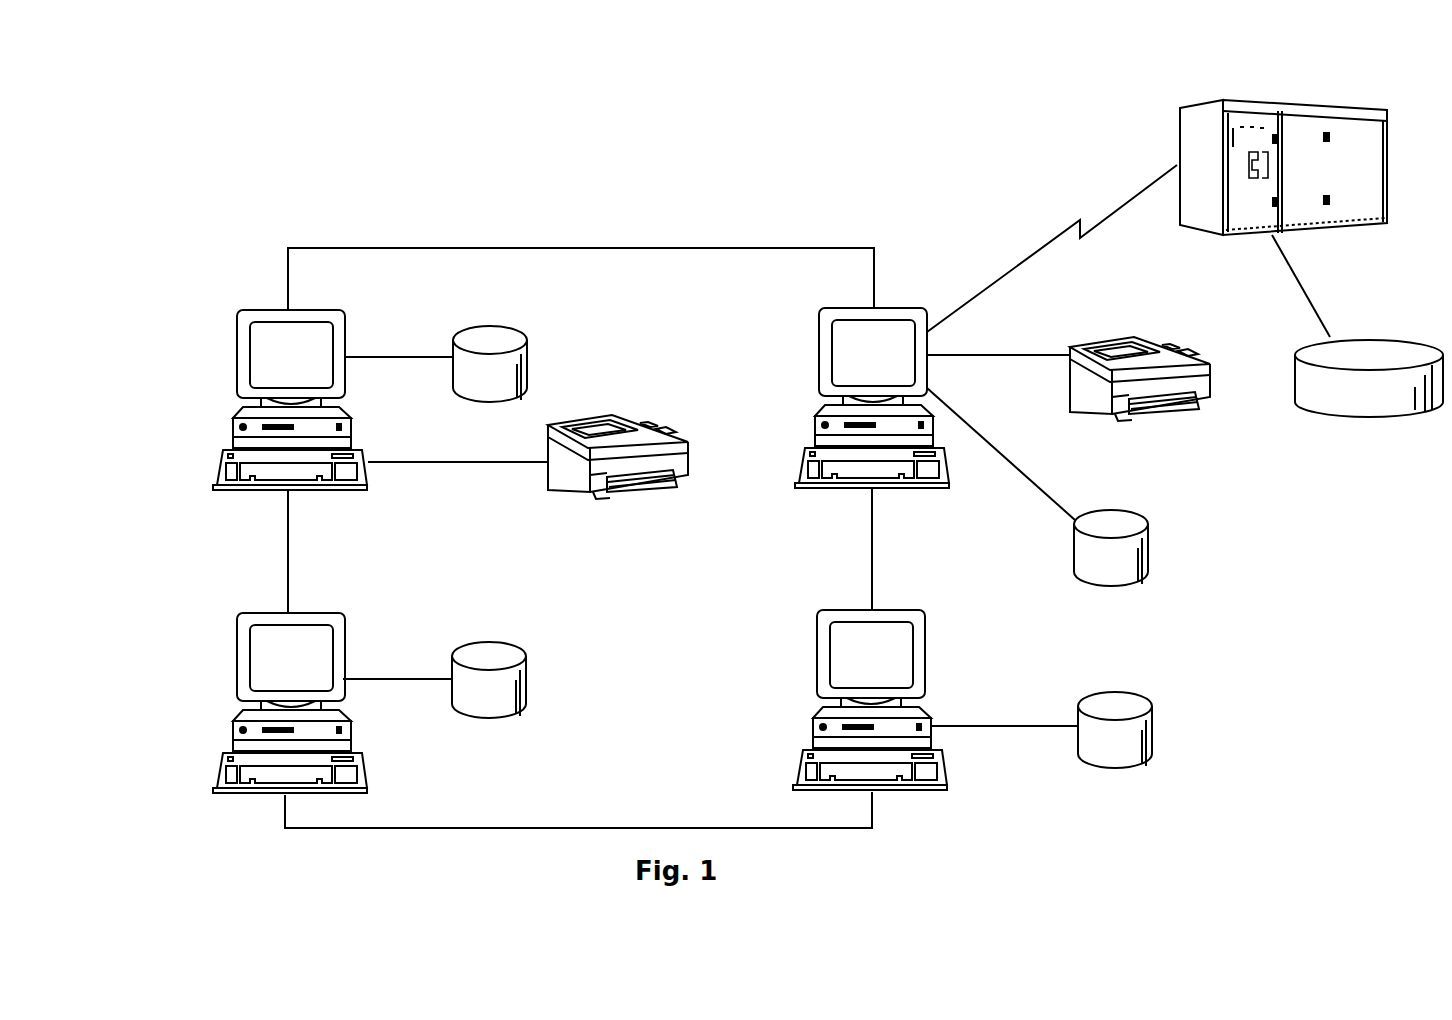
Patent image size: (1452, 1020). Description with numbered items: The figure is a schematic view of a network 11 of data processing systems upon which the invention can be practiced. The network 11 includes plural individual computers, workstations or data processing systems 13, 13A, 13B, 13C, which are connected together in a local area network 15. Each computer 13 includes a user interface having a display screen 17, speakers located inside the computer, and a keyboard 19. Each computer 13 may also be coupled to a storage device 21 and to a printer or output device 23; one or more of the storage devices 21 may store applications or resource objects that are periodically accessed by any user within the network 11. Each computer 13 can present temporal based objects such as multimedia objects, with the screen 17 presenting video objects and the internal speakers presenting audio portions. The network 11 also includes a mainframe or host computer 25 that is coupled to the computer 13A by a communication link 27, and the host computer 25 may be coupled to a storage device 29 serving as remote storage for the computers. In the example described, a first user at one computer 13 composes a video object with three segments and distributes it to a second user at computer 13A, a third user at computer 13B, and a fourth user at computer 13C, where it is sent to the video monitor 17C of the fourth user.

The network 11 is at (557, 187).
The computer 13 is at (248, 310).
The computer 13A is at (902, 308).
The computer 13B is at (330, 613).
The computer 13C is at (817, 638).
The local area network 15 is at (520, 829).
The display screen 17 is at (262, 349).
The video monitor 17C is at (837, 653).
The keyboard 19 is at (308, 490).
The storage device 21 is at (508, 326).
The printer 23 is at (633, 418).
The host computer 25 is at (1184, 106).
The communication link 27 is at (1107, 212).
The storage device 29 is at (1318, 413).